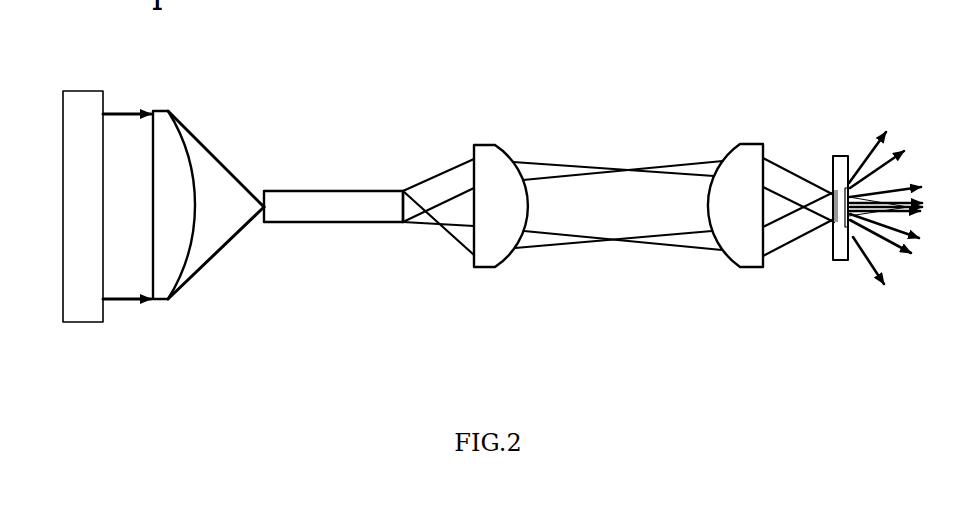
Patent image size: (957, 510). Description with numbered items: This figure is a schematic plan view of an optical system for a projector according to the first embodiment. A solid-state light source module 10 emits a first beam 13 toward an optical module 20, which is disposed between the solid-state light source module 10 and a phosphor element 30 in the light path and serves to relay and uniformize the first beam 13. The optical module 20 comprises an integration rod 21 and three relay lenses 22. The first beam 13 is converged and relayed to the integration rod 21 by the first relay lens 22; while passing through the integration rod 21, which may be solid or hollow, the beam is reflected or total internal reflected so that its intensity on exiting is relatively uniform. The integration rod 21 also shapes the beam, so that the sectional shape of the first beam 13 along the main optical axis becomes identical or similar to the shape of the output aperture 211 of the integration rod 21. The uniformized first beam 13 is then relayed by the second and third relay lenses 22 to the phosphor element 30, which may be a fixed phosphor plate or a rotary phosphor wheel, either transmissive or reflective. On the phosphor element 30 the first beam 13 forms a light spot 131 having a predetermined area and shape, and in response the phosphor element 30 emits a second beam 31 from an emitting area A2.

The solid-state light source module 10 is at (93, 89).
The relay lens 22 is at (160, 108).
The first beam 13 is at (200, 170).
The integration rod 21 is at (273, 213).
The output aperture 211 is at (401, 211).
The optical module 20 is at (755, 310).
The phosphor element 30 is at (841, 154).
The emitting area A2 is at (844, 188).
The light spot 131 is at (831, 207).
The second beam 31 is at (860, 256).